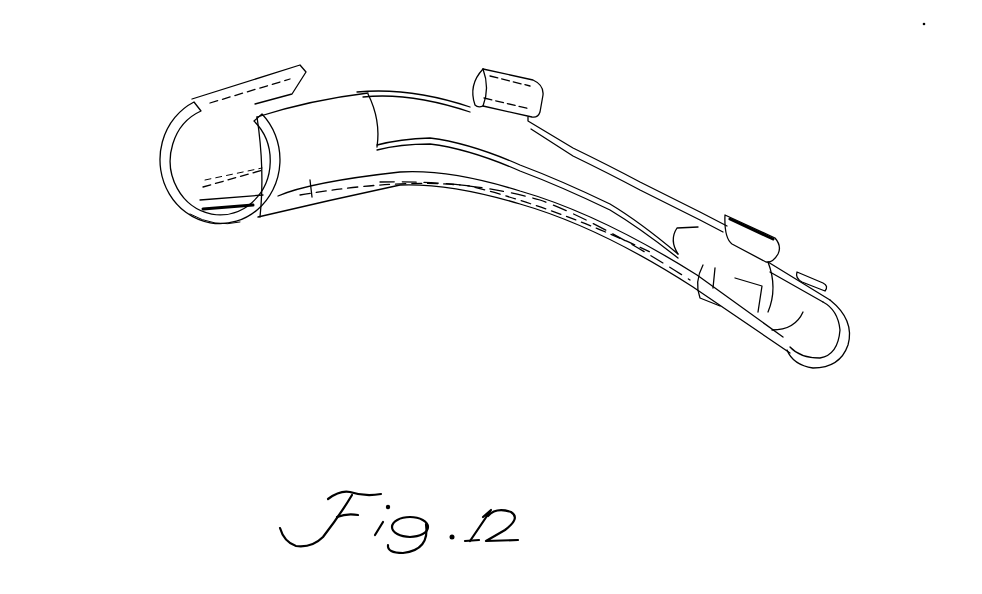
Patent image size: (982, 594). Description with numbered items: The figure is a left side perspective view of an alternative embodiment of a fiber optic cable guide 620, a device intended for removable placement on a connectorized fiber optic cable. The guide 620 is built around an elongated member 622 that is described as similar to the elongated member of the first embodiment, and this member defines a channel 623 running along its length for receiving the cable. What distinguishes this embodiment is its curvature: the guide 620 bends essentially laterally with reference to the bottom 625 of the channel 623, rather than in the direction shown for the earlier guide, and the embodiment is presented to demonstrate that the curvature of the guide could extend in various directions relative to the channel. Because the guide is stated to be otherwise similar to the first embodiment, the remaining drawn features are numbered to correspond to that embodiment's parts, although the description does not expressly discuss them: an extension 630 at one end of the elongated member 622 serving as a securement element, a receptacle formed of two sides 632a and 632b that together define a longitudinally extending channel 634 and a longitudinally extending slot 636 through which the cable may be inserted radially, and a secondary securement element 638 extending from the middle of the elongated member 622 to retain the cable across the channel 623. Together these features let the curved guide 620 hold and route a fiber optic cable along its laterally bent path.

The fiber optic cable guide 620 is at (612, 259).
The elongated member 622 is at (577, 218).
The channel 623 is at (437, 120).
The bottom 625 is at (195, 213).
The end clip 630 is at (812, 273).
The sleeve band 632a is at (307, 180).
The C-shaped clip 632b is at (178, 113).
The clip opening 634 is at (214, 161).
The clip tab 636 is at (250, 102).
The boss 638 is at (518, 80).